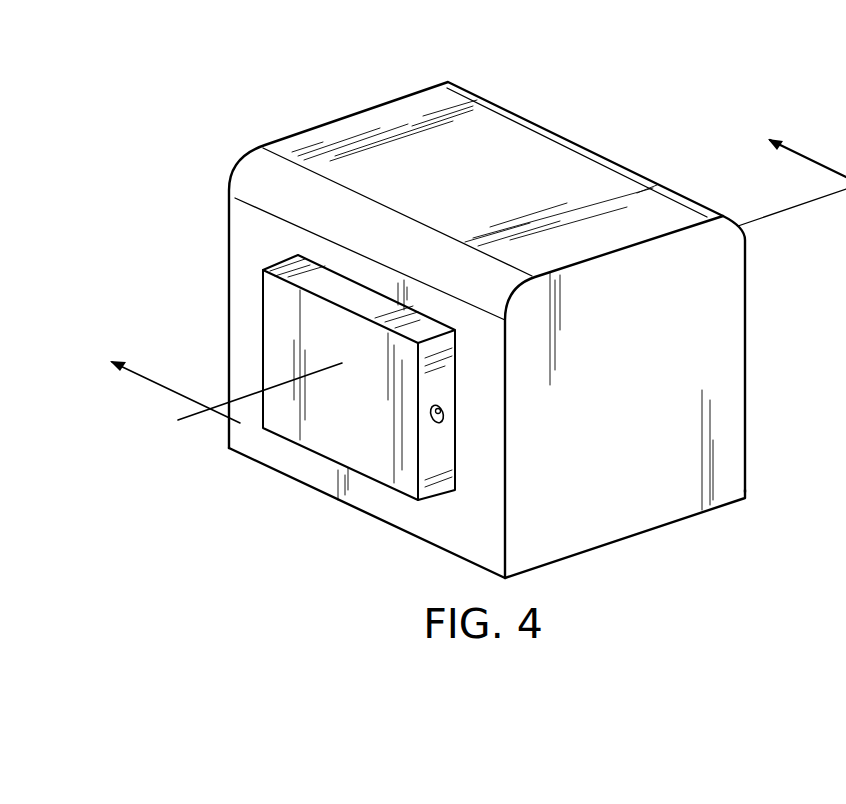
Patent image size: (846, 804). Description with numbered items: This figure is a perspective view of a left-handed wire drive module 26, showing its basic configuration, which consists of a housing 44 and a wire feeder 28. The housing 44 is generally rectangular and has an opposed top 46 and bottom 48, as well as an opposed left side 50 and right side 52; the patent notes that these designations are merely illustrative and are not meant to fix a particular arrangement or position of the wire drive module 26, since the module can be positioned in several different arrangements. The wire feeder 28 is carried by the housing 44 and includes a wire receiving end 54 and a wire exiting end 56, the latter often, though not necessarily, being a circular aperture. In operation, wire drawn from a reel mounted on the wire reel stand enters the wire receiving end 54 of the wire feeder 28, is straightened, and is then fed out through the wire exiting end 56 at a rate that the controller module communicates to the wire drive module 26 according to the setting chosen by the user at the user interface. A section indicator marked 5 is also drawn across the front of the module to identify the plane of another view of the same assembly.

The wire drive module 26 is at (637, 142).
The wire feeder 28 is at (327, 423).
The housing 44 is at (737, 224).
The top 46 is at (512, 117).
The bottom 48 is at (602, 545).
The left side 50 is at (457, 523).
The right side 52 is at (750, 358).
The wire receiving end 54 is at (273, 355).
The wire exiting end 56 is at (437, 427).
The section line 5- 5 is at (226, 401).